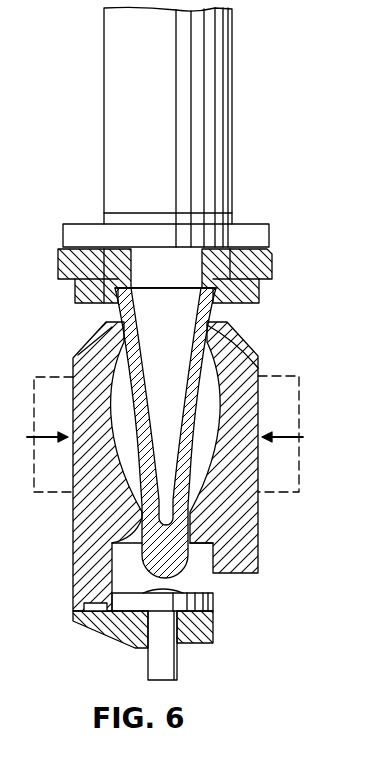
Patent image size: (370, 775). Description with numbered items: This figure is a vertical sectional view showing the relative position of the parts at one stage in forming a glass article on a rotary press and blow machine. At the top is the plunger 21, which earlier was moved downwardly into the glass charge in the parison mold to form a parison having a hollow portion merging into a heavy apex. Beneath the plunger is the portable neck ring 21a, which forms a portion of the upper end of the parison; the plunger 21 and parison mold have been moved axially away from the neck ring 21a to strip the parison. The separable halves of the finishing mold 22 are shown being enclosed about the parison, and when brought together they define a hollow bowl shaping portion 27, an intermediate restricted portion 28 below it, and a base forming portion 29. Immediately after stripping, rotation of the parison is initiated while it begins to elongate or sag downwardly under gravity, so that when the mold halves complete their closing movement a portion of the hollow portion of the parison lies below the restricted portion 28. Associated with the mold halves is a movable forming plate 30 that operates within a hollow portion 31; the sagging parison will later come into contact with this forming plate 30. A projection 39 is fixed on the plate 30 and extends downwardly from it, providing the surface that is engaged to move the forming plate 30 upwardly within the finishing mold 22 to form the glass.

The plunger 21 is at (267, 233).
The portable neck ring 21a is at (248, 297).
The finishing mold halves 22 is at (257, 410).
The hollow bowl shaping portion 27 is at (255, 363).
The intermediate restricted portion 28 is at (190, 518).
The base forming portion 29 is at (213, 538).
The forming plate 30 is at (213, 607).
The hollow portion 31 is at (203, 582).
The projection 39 is at (177, 660).